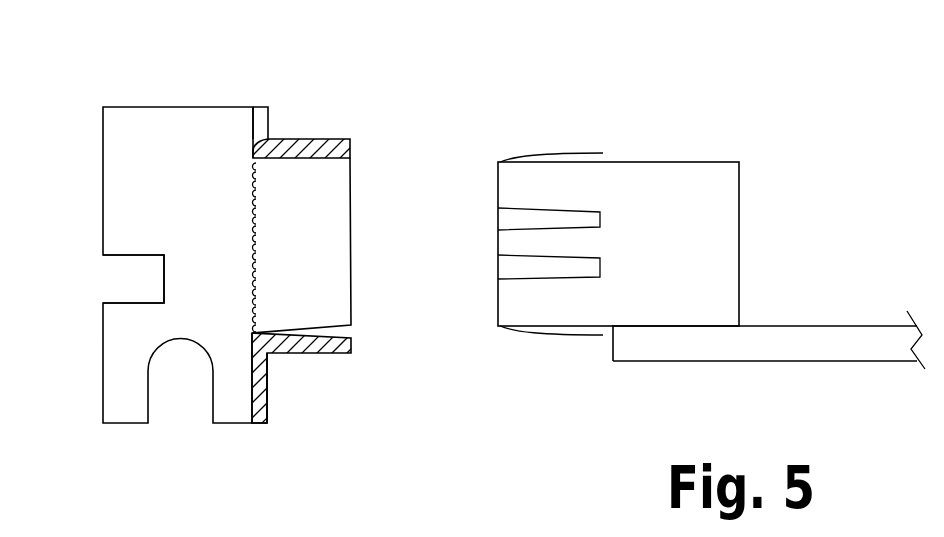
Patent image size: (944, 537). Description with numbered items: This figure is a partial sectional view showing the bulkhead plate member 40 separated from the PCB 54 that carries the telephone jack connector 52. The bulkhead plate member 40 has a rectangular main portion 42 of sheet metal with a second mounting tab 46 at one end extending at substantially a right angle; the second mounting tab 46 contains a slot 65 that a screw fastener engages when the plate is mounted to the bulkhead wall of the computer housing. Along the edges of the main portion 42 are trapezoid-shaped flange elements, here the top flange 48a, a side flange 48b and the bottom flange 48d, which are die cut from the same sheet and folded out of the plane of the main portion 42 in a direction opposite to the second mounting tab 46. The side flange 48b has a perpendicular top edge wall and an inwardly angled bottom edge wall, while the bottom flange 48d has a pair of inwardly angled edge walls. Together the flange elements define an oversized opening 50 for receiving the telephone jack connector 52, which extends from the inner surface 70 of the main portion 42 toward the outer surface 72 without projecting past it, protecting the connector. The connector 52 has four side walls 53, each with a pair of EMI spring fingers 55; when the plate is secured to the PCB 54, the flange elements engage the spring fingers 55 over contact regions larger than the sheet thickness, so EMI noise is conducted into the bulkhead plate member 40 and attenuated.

The bulkhead plate member 40 is at (193, 428).
The main portion 42 is at (262, 107).
The second mounting tab 46 is at (165, 125).
The top flange 48a is at (303, 140).
The side flange 48b is at (333, 264).
The bottom flange 48d is at (308, 356).
The oversized opening 50 is at (357, 163).
The RJ-45 telephone jack connector 52 is at (643, 218).
The side wall 53 is at (642, 160).
The PCB 54 is at (860, 349).
The EMI spring fingers 55 is at (565, 150).
The slot 65 is at (135, 303).
The inner surface 70 is at (268, 405).
The outer surface 72 is at (253, 400).